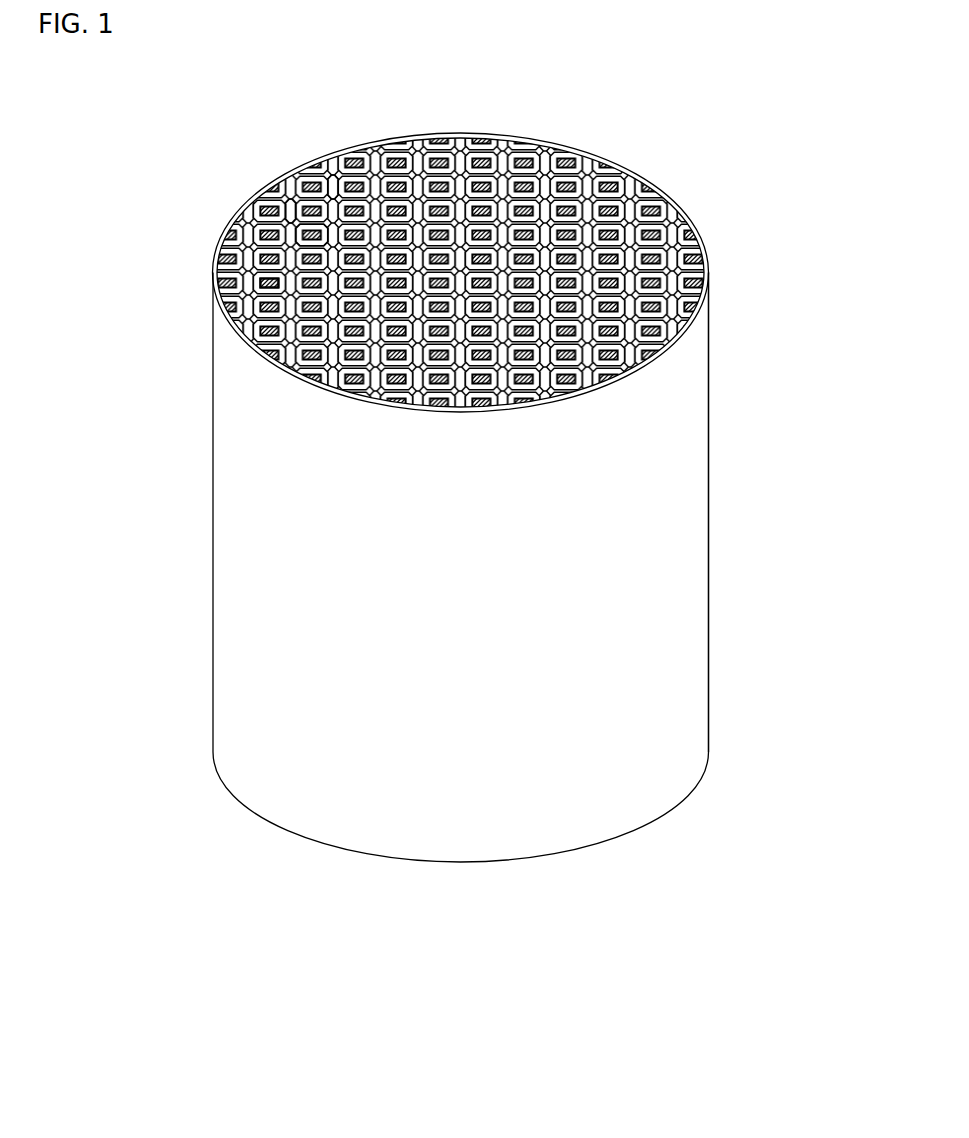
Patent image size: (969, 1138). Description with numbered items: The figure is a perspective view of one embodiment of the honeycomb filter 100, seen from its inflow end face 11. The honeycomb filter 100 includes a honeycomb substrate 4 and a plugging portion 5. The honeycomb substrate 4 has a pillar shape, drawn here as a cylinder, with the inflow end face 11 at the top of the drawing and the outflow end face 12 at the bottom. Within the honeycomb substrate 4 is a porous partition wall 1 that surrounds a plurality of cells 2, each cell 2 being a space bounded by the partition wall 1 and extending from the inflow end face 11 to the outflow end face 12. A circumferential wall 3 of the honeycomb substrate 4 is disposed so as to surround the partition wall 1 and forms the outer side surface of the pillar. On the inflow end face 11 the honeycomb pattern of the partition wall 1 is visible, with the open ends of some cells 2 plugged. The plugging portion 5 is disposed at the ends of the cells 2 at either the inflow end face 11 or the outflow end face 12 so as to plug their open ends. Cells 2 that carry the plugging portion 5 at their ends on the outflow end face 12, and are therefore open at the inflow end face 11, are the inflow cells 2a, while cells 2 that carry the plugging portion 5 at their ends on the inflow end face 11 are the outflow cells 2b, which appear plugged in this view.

The honeycomb filter 100 is at (729, 112).
The partition wall 1 is at (328, 177).
The cells 2 is at (421, 244).
The inflow cells 2a is at (288, 208).
The outflow cells 2b is at (311, 237).
The circumferential wall 3 is at (670, 398).
The honeycomb substrate 4 is at (708, 478).
The plugging portion 5 is at (260, 281).
The inflow end face 11 is at (402, 128).
The outflow end face 12 is at (368, 862).